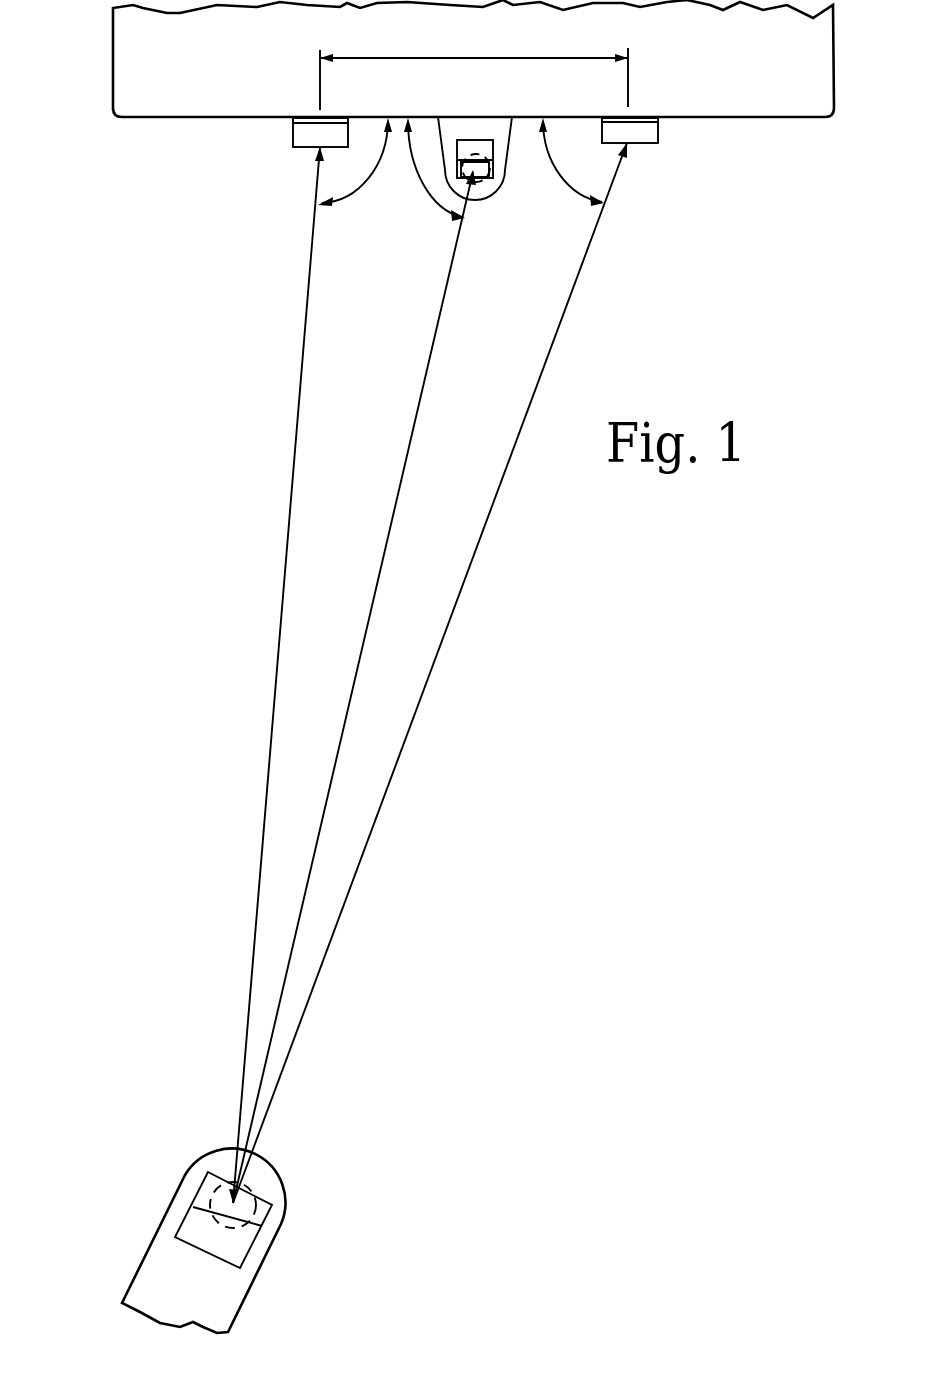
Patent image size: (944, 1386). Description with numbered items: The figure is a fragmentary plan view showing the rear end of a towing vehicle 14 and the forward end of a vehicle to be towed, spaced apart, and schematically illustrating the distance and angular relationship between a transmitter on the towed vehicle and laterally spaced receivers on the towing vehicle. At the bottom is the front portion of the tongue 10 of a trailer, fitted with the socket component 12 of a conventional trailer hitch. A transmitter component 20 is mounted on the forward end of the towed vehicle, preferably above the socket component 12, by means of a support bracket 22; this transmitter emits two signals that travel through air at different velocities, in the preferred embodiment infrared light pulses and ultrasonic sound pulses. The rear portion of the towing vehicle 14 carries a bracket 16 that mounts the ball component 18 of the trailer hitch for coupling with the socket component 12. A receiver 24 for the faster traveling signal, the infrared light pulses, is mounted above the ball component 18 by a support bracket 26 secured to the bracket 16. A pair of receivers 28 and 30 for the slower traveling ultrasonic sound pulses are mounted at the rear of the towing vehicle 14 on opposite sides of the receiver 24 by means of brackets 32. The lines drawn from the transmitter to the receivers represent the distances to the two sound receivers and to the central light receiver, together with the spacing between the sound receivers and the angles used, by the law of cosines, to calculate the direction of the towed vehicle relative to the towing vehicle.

The tongue 10 is at (225, 1312).
The socket component 12 is at (210, 1193).
The towing vehicle 14 is at (803, 97).
The bracket 16 is at (498, 130).
The ball component 18 is at (488, 140).
The transmitter component 20 is at (258, 1220).
The support bracket 22 is at (237, 1250).
The receiver 24 is at (492, 167).
The support bracket 26 is at (468, 142).
The receiver 28 is at (305, 140).
The receiver 30 is at (647, 128).
The brackets 32 is at (313, 118).